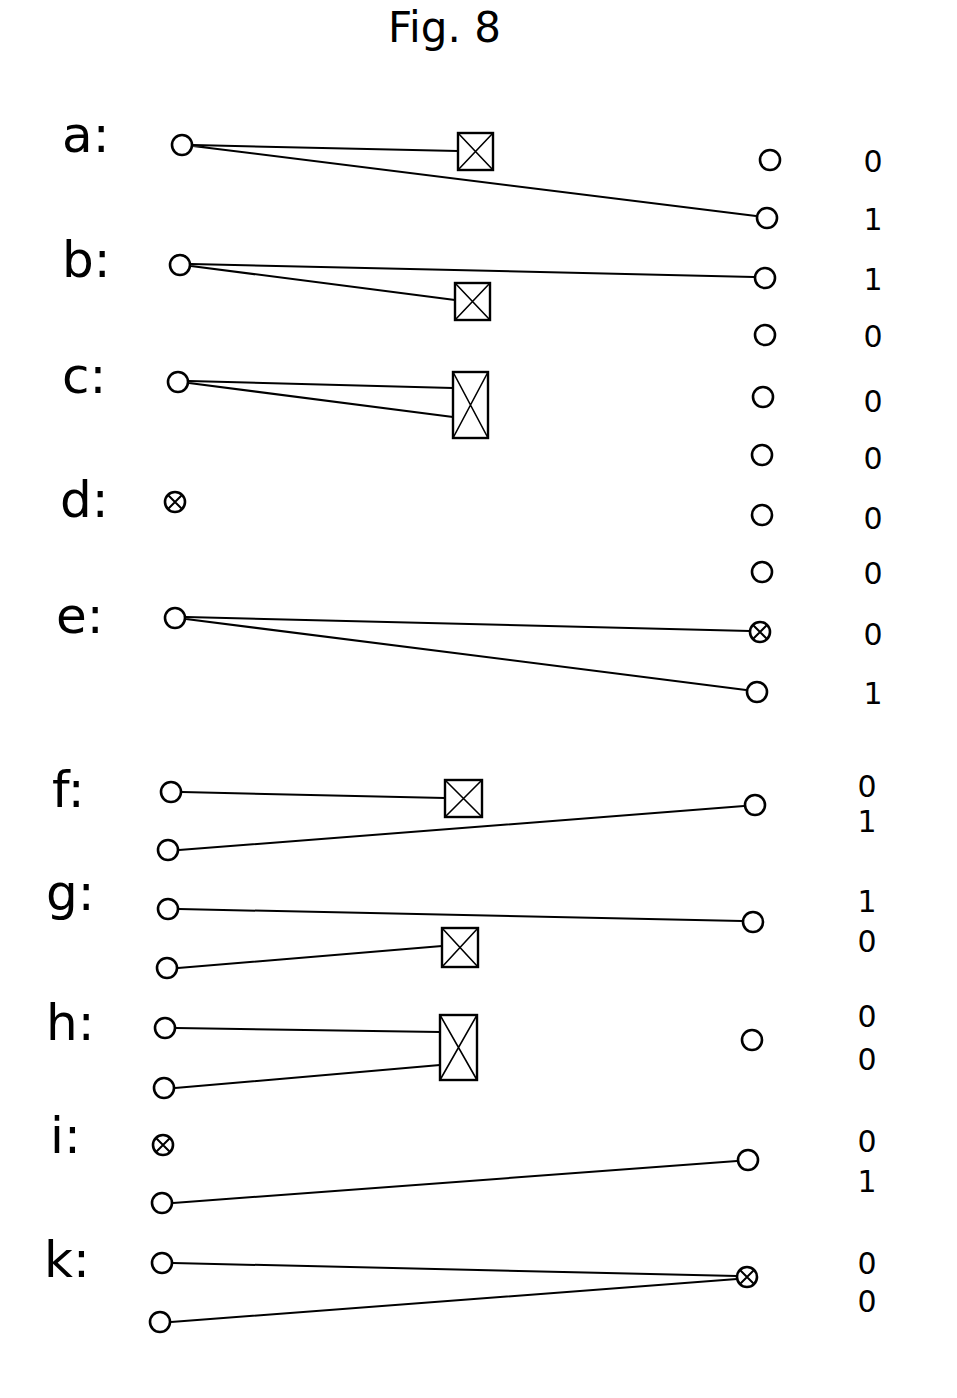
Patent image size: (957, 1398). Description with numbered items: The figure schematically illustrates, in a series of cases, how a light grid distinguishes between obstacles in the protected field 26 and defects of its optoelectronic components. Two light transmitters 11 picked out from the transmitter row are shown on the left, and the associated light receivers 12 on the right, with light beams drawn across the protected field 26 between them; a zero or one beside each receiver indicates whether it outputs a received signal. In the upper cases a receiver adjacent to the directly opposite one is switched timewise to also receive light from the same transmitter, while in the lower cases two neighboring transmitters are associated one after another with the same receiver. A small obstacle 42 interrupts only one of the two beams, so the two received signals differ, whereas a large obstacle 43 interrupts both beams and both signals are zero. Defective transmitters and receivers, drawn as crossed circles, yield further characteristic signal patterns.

The light transmitter 11 is at (154, 1319).
The light receiver 12 is at (777, 153).
The protected field 26 is at (463, 733).
The small obstacle 42 is at (493, 152).
The large obstacle 43 is at (475, 430).